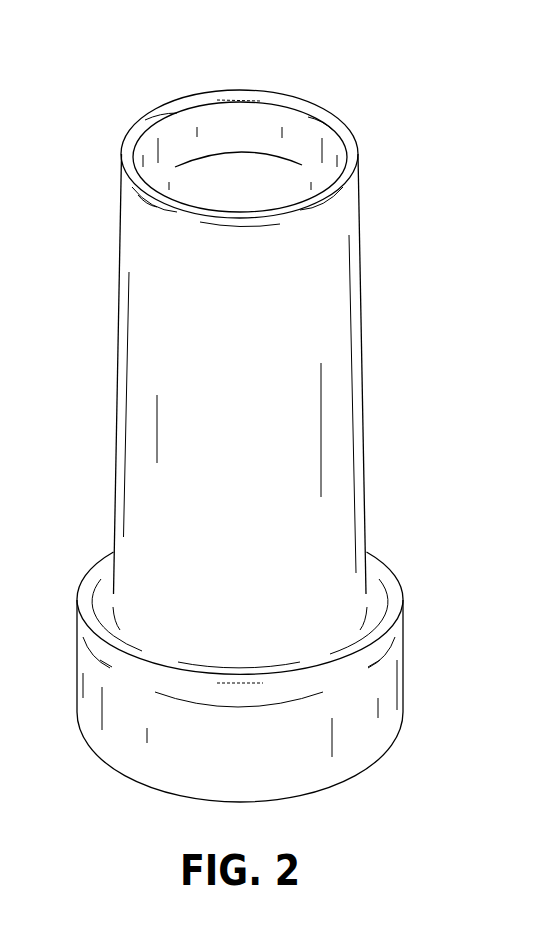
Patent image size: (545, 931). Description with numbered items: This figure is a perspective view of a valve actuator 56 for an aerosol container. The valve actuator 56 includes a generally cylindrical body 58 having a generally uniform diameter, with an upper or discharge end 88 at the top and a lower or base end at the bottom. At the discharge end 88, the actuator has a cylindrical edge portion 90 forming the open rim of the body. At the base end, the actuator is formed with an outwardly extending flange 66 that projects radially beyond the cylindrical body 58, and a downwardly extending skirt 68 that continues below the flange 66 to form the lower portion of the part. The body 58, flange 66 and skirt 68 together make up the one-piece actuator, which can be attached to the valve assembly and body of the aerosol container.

The valve actuator 56 is at (298, 416).
The generally cylindrical body 58 is at (364, 427).
The outwardly extending flange 66 is at (395, 593).
The downwardly extending skirt 68 is at (405, 675).
The upper or discharge end 88 is at (213, 130).
The cylindrical edge portion 90 is at (302, 98).